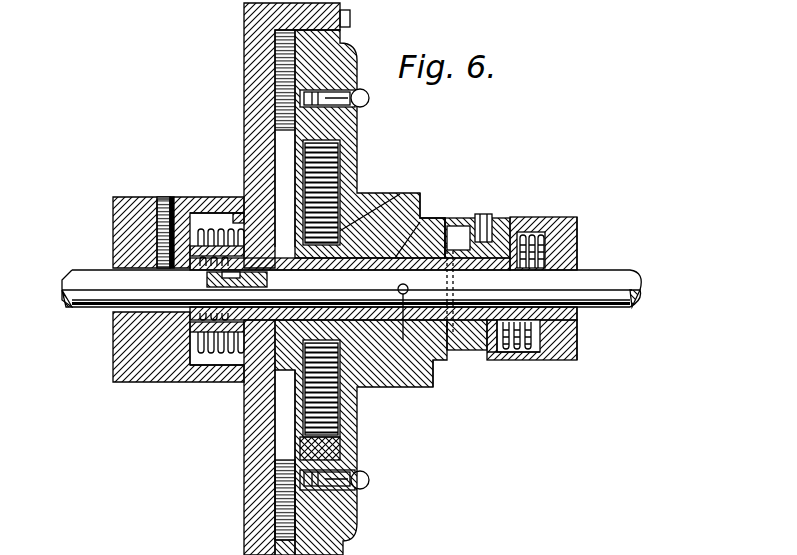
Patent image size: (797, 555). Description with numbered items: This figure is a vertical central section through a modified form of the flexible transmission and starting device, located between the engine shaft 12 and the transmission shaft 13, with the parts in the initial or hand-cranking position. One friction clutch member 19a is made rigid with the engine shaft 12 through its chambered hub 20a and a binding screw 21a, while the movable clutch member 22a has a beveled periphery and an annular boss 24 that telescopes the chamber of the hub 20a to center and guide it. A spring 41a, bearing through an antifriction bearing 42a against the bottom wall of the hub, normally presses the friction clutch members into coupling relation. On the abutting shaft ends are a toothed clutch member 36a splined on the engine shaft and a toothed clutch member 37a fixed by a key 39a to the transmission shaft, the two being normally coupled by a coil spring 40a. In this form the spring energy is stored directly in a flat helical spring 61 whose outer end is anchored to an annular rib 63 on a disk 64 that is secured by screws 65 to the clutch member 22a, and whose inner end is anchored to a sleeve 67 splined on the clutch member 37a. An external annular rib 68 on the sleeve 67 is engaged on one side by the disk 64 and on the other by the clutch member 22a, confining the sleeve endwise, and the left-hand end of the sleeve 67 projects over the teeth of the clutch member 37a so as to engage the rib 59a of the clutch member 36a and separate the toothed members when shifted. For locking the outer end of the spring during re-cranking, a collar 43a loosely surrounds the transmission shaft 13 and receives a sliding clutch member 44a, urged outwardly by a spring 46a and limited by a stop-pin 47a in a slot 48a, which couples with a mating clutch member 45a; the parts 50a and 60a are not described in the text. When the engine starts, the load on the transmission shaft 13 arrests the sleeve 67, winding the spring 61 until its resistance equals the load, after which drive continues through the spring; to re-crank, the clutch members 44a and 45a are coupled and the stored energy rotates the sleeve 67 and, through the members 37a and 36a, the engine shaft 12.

The engine shaft 12 is at (93, 301).
The transmission shaft 13 is at (597, 278).
The friction clutch member 19a is at (247, 21).
The hub 20a is at (123, 198).
The binding screw 21a is at (158, 196).
The movable clutch member 22a is at (275, 49).
The annular boss 24 is at (246, 216).
The toothed clutch member 36a is at (243, 322).
The toothed clutch member 37a is at (444, 190).
The key 39a is at (424, 364).
The coil spring 40a is at (200, 258).
The spring 41a is at (220, 230).
The antifriction bearing 42a is at (188, 203).
The collar 43a is at (560, 222).
The sliding clutch member 44a is at (493, 359).
The mating clutch member 45a is at (448, 352).
The spring 46a is at (533, 348).
The stop-pin 47a is at (486, 212).
The slot 48a is at (504, 220).
The end plate 50a is at (578, 240).
The rib 59a is at (243, 383).
The retaining ring 60a is at (487, 362).
The flat helical spring 61 is at (350, 178).
The annular rib 63 is at (292, 130).
The disk 64 is at (358, 421).
The screws 65 is at (369, 100).
The sleeve 67 is at (418, 211).
The external annular rib 68 is at (378, 188).